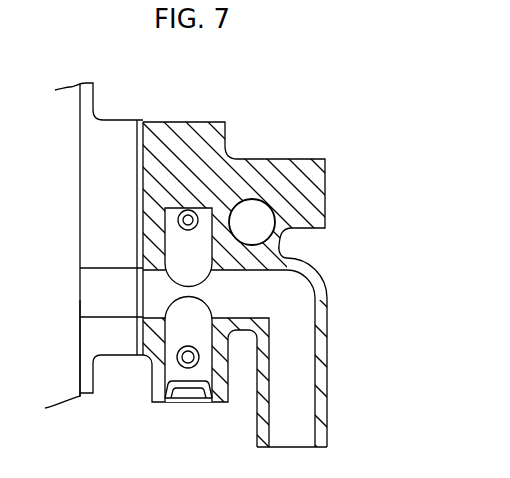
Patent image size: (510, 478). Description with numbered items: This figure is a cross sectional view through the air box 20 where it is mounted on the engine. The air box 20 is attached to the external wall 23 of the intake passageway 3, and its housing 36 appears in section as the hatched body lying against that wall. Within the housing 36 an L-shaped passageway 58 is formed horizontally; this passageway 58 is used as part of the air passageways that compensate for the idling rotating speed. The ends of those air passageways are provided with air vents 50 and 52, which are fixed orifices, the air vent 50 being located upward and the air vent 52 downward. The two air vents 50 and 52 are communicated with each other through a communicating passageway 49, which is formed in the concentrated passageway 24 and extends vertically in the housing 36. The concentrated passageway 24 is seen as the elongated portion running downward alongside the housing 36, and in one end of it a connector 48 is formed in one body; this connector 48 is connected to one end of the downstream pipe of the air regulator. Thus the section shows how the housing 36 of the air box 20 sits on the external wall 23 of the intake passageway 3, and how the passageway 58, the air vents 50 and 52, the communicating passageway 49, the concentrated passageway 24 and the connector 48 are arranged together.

The intake passageway 3 is at (38, 233).
The air box 20 is at (303, 151).
The external wall 23 is at (82, 350).
The concentrated passageway 24 is at (302, 283).
The housing 36 is at (313, 185).
The connector 48 is at (324, 418).
The communicating passageway 49 is at (205, 336).
The air vent 50 is at (189, 208).
The air vent 52 is at (188, 357).
The L-shaped passageway 58 is at (252, 205).